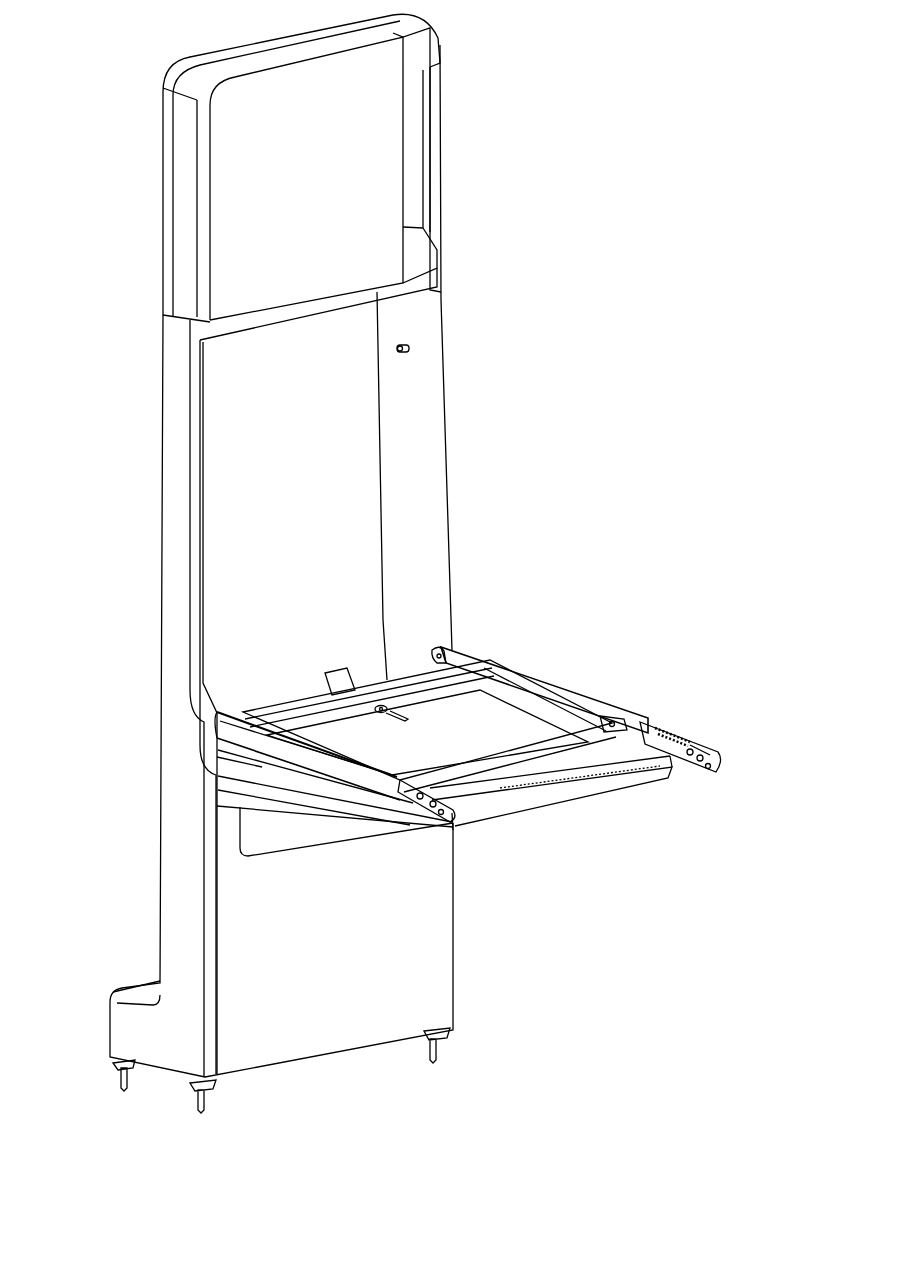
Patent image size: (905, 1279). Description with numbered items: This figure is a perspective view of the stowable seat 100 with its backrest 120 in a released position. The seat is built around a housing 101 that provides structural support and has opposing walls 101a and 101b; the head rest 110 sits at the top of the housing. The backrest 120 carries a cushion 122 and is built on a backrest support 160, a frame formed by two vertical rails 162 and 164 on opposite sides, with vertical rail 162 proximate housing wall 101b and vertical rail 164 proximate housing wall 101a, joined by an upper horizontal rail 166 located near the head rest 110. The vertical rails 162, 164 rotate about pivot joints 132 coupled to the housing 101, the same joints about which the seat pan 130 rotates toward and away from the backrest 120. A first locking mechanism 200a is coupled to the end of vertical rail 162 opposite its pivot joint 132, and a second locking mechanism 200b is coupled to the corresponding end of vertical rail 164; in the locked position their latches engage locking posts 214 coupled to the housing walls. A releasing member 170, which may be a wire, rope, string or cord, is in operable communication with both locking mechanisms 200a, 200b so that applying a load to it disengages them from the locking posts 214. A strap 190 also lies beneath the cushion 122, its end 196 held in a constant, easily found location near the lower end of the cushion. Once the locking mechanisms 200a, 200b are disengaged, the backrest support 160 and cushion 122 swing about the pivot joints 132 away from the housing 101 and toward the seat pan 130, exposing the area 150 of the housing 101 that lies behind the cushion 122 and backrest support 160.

The stowable seat 100 is at (133, 92).
The housing 101 is at (141, 315).
The housing wall 101a is at (178, 445).
The housing wall 101b is at (420, 423).
The head rest 110 is at (323, 189).
The area 150 is at (316, 504).
The locking post 214 is at (410, 345).
The backrest 120 is at (528, 671).
The cushion 122 is at (498, 725).
The seat pan 130 is at (407, 817).
The pivot joint 132 is at (445, 646).
The backrest support structure 160 is at (636, 793).
The vertical rail 162 is at (600, 708).
The vertical rail 164 is at (265, 740).
The upper horizontal rail 166 is at (563, 767).
The releasing member 170 is at (650, 719).
The strap 190 is at (457, 740).
The end of strap 196 is at (343, 672).
The first locking mechanism 200a is at (717, 742).
The second locking mechanism 200b is at (455, 820).